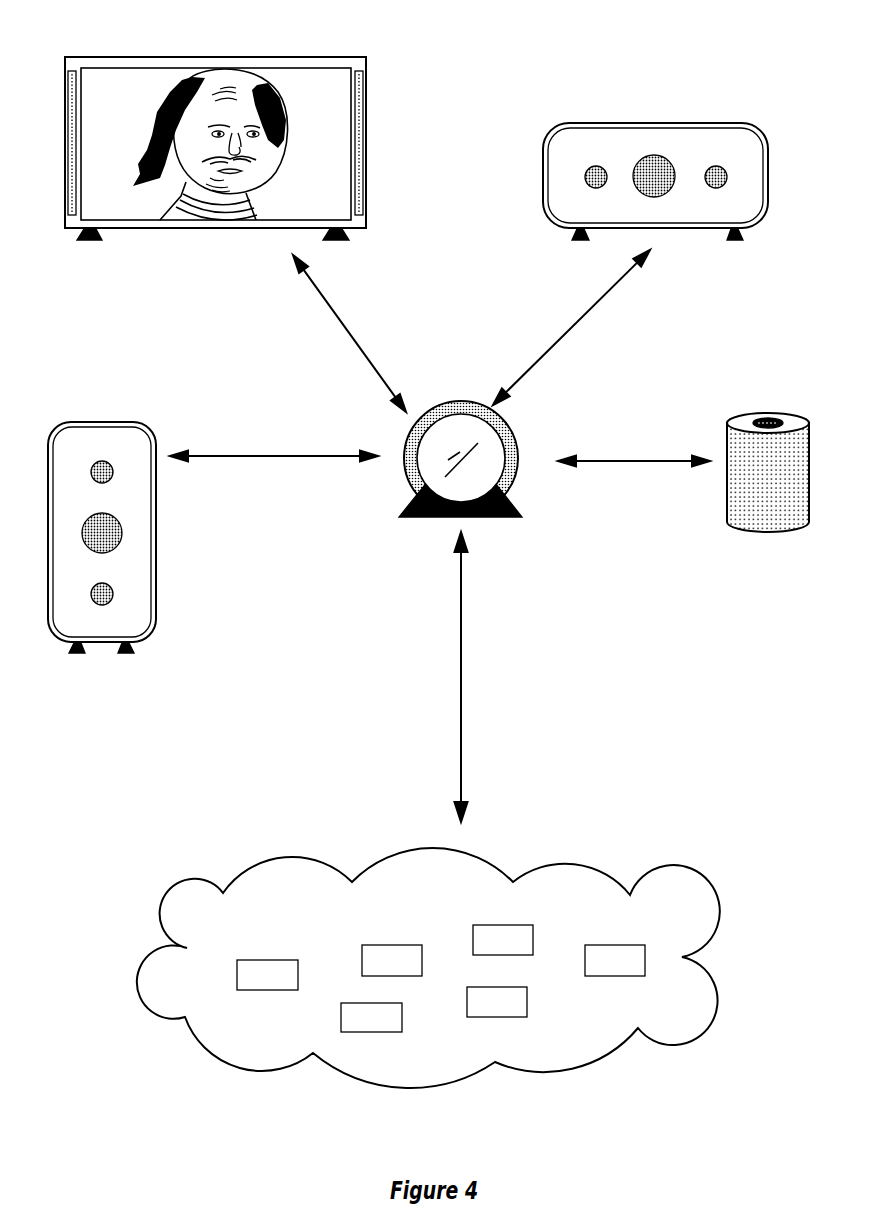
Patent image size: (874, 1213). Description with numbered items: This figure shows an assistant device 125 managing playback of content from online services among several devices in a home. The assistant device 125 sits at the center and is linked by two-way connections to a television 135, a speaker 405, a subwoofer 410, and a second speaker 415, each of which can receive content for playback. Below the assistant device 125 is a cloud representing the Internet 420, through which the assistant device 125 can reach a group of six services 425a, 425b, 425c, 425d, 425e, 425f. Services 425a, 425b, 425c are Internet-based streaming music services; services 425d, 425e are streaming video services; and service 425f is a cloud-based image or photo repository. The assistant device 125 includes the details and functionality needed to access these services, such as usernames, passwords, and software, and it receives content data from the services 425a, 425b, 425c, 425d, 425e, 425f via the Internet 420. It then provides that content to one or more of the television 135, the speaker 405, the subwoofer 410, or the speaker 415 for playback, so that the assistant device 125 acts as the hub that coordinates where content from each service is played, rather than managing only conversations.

The television 135 is at (278, 57).
The speaker 405 is at (686, 124).
The speaker 415 is at (122, 422).
The subwoofer 410 is at (753, 412).
The assistant device 125 is at (508, 518).
The Internet 420 is at (432, 968).
The service 425a is at (267, 975).
The service 425b is at (392, 960).
The service 425c is at (371, 1017).
The service 425d is at (497, 1002).
The service 425e is at (503, 940).
The service 425f is at (615, 960).